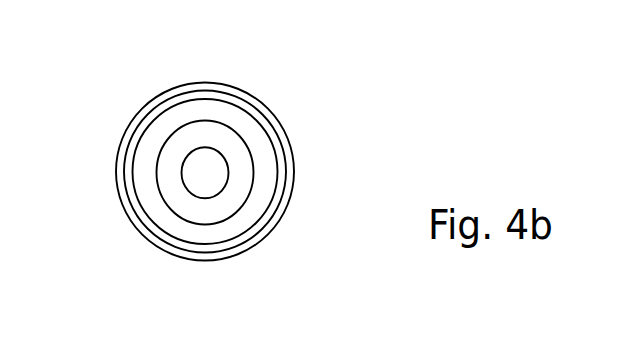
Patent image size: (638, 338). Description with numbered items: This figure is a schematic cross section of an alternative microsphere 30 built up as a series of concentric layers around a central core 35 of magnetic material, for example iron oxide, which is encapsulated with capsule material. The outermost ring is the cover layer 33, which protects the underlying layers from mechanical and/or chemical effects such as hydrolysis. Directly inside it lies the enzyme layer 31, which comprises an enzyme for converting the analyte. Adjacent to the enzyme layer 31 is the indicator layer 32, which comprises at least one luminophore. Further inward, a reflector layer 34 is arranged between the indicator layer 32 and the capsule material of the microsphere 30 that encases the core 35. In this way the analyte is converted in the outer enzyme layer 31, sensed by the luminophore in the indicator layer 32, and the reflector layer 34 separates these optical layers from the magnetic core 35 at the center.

The microsphere 30 is at (208, 147).
The enzyme layer 31 is at (148, 110).
The indicator layer 32 is at (143, 172).
The cover layer 33 is at (138, 232).
The reflector layer 34 is at (243, 137).
The core 35 is at (215, 172).